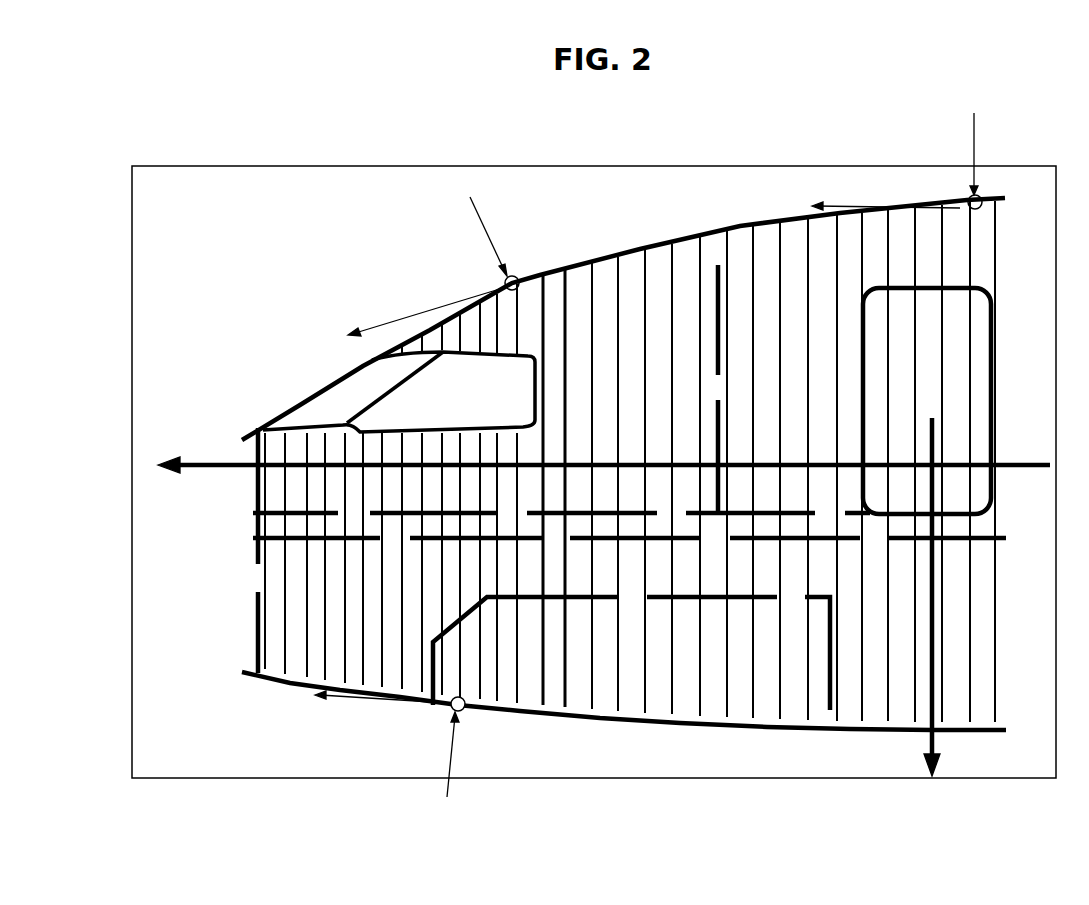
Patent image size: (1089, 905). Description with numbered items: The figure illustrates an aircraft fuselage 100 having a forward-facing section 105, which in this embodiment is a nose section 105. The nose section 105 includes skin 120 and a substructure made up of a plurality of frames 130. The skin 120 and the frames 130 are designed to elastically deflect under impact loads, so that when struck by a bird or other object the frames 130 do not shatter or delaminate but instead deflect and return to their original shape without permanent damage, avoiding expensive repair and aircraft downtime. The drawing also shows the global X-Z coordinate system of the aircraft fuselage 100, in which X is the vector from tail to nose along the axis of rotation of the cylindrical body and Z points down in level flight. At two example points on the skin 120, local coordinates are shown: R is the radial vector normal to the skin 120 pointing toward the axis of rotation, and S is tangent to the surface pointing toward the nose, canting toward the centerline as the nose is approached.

The aircraft fuselage 100 is at (255, 165).
The forward-facing section 105 is at (280, 335).
The skin 120 is at (742, 224).
The frames 130 is at (672, 268).